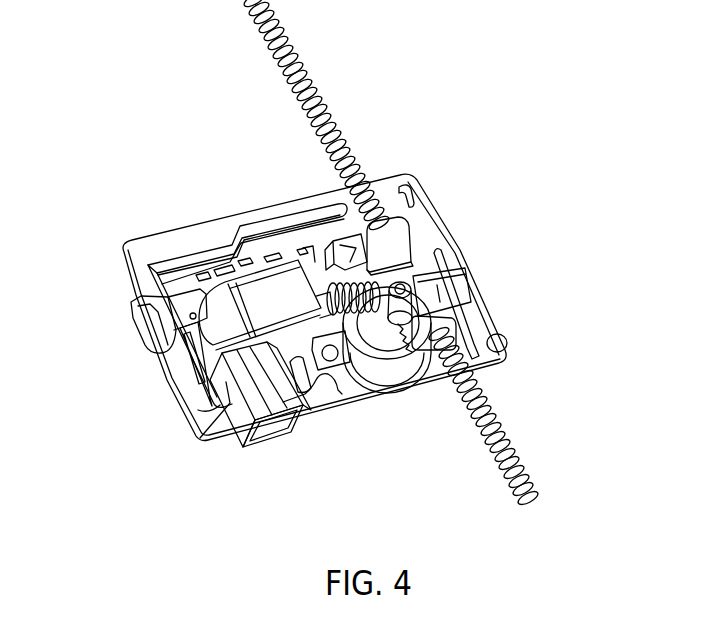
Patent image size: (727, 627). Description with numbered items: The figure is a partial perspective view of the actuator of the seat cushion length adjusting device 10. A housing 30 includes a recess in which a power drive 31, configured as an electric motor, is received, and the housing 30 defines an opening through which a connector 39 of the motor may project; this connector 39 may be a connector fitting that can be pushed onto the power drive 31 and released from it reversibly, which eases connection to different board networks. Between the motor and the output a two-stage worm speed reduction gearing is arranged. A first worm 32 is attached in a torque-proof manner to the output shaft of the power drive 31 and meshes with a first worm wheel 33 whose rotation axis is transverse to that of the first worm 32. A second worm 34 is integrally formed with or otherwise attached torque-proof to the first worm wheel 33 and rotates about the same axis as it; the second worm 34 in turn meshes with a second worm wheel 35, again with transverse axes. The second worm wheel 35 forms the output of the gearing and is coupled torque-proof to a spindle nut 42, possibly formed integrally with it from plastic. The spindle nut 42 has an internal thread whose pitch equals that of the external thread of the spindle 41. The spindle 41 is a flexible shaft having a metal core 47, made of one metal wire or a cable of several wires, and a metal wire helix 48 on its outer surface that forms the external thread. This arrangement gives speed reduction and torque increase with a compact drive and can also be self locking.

The seat cushion length adjusting device 10 is at (93, 48).
The housing 30 is at (124, 247).
The power drive 31 is at (205, 312).
The first worm 32 is at (310, 258).
The first worm wheel 33 is at (354, 278).
The second worm 34 is at (396, 330).
The second worm wheel 35 is at (438, 284).
The connector 39 is at (240, 443).
The spindle 41 is at (268, 49).
The spindle nut 42 is at (400, 245).
The metal core 47 is at (303, 96).
The metal wire helix 48 is at (308, 82).